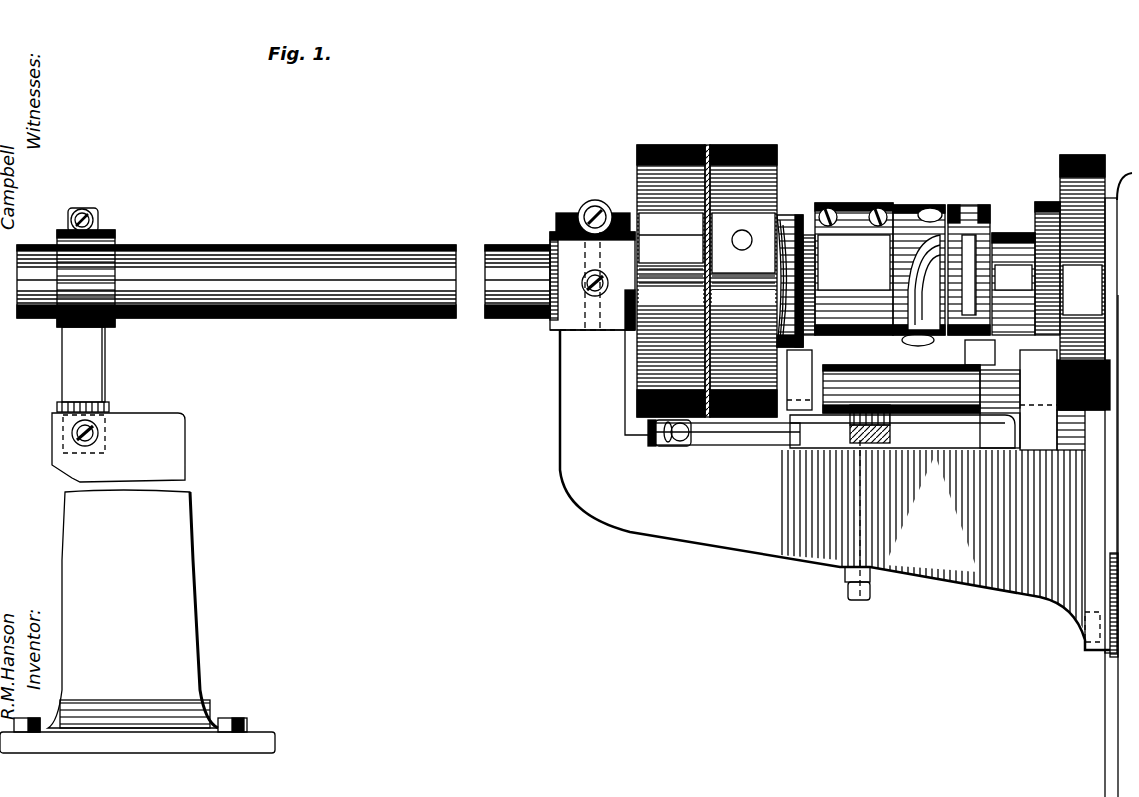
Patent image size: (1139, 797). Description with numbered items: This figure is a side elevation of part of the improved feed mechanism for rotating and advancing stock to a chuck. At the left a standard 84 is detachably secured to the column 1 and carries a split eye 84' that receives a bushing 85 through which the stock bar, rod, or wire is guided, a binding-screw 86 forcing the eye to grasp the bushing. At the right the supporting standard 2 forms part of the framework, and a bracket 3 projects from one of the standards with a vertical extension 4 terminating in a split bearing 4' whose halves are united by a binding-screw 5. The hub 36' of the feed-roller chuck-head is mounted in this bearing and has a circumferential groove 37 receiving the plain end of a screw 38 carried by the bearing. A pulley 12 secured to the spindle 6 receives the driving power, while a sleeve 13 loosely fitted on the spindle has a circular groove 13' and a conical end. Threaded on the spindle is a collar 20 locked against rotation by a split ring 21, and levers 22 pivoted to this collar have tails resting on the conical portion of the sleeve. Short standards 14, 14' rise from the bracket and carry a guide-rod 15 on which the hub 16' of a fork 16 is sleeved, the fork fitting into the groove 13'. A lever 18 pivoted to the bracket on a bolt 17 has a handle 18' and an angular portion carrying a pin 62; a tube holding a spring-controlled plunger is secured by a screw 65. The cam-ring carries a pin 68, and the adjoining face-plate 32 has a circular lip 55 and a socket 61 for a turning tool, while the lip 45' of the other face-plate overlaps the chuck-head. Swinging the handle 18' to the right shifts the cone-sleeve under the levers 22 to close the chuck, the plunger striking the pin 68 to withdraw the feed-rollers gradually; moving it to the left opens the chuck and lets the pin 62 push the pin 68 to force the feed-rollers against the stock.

The supporting standard 1 is at (137, 583).
The supporting standard 2 is at (1115, 680).
The bracket 3 is at (841, 485).
The vertical extension 4 is at (592, 281).
The split bearing 4' is at (589, 205).
The binding-screw 5 is at (600, 205).
The spindle 6 is at (1008, 233).
The pulley 12 is at (1078, 155).
The sleeve 13 is at (965, 254).
The circular groove 13' is at (986, 244).
The short standard 14 is at (799, 380).
The short standard 14' is at (1038, 400).
The guide-rod 15 is at (990, 415).
The fork 16 is at (997, 349).
The hub 16' is at (921, 389).
The bolt 17 is at (858, 600).
The lever 18 is at (902, 431).
The handle 18' is at (893, 449).
The collar 20 is at (872, 208).
The split ring 21 is at (830, 208).
The lever 22 is at (919, 282).
The face-plate 32 is at (745, 145).
The hub 36' is at (521, 265).
The circumferential groove 37 is at (583, 322).
The screw 38 is at (582, 277).
The circular lip 45' is at (671, 268).
The circular lip 55 is at (708, 250).
The socket 61 is at (736, 248).
The pin 62 is at (682, 440).
The screw 65 is at (650, 436).
The pin 68 is at (672, 443).
The standard 84 is at (83, 369).
The split eye 84' is at (106, 267).
The bushing 85 is at (135, 318).
The binding-screw 86 is at (94, 218).